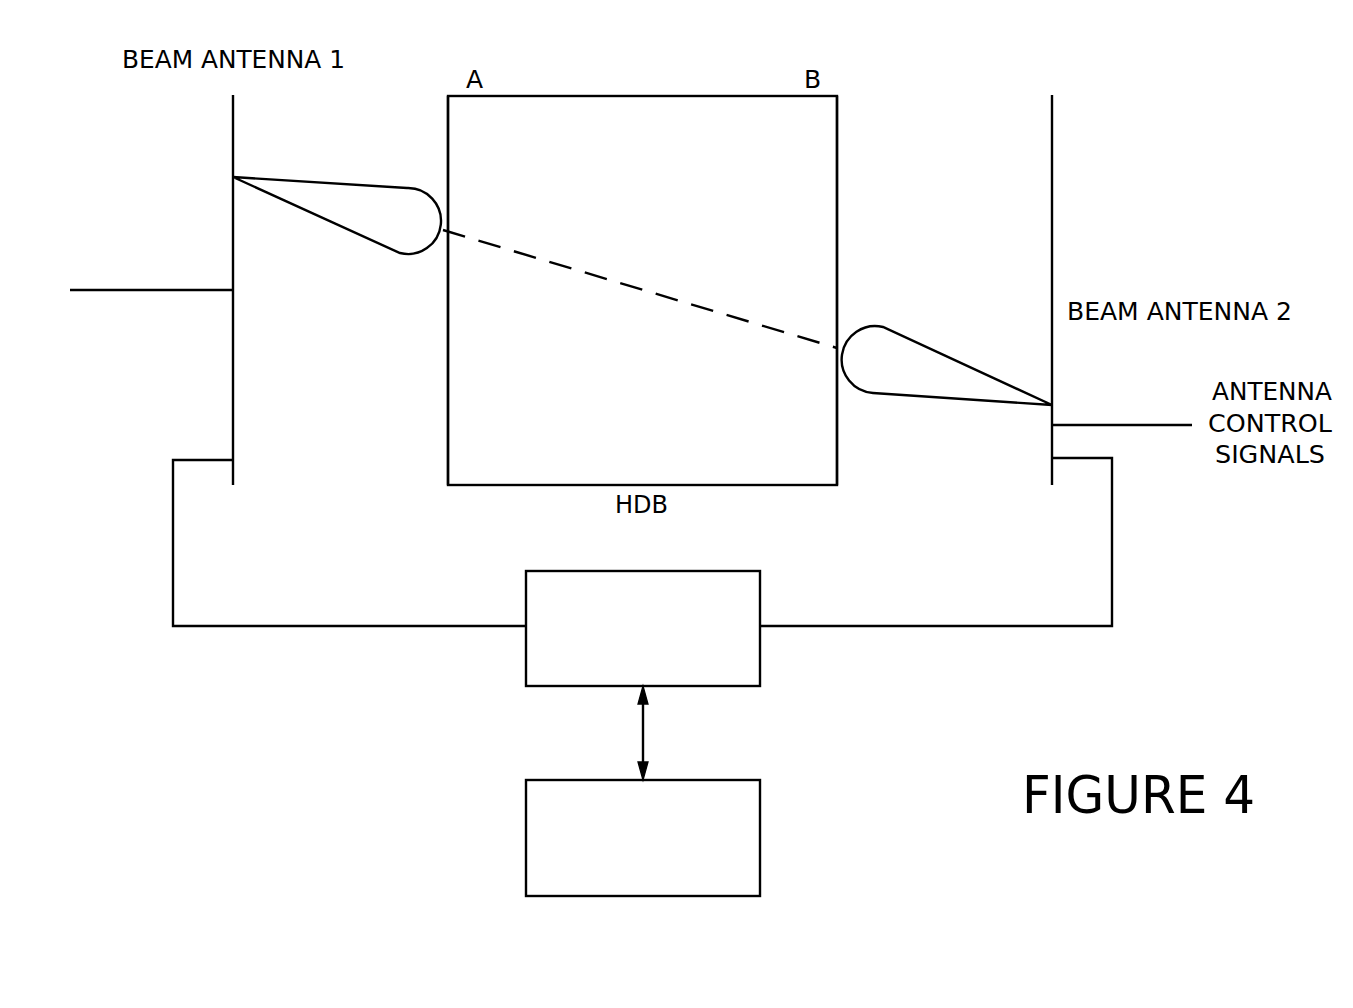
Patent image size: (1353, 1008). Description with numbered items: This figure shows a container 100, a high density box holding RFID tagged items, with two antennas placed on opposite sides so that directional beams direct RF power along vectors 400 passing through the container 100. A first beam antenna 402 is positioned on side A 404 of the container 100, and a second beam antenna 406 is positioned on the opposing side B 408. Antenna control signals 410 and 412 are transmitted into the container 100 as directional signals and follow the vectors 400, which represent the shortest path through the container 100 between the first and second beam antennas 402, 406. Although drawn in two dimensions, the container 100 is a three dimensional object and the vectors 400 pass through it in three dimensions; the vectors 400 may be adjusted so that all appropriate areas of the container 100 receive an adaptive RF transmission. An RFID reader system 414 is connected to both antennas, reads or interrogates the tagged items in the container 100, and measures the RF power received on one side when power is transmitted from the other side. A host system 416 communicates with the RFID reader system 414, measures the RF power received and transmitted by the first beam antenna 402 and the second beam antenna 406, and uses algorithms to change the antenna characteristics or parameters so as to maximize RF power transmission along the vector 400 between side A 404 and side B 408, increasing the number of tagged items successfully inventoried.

The container 100 is at (670, 96).
The vectors 400 is at (622, 286).
The first beam antenna 402 is at (287, 180).
The side A 404 is at (448, 363).
The second beam antenna 406 is at (953, 375).
The side B 408 is at (837, 155).
The antenna control signal 410 is at (172, 290).
The antenna control signal 412 is at (1119, 425).
The RFID reader system 414 is at (733, 571).
The host system 416 is at (727, 780).